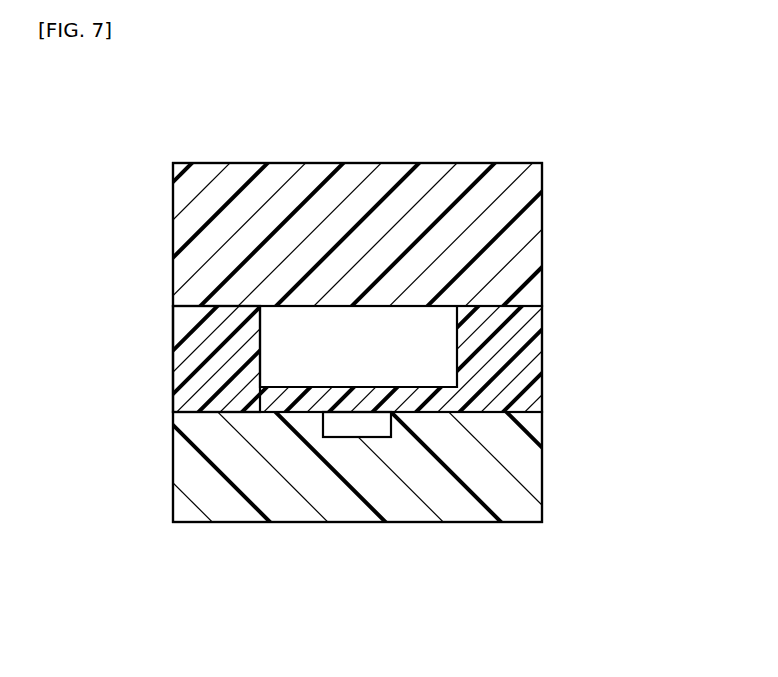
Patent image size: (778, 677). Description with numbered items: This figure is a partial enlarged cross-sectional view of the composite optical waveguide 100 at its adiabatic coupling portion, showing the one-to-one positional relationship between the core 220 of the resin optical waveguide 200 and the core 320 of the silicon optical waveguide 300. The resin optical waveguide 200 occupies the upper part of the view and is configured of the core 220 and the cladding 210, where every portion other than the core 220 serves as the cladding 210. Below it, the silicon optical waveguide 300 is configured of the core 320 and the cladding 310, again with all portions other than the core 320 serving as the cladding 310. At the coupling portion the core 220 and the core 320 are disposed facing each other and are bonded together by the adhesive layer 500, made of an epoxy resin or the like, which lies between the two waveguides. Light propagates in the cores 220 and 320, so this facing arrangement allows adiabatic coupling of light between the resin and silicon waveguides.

The composite optical waveguide 100 is at (545, 140).
The resin optical waveguide 200 is at (623, 215).
The cladding 210 is at (520, 232).
The core 220 is at (436, 352).
The adhesive layer 500 is at (197, 361).
The silicon optical waveguide 300 is at (472, 580).
The cladding 310 is at (441, 505).
The core 320 is at (360, 425).